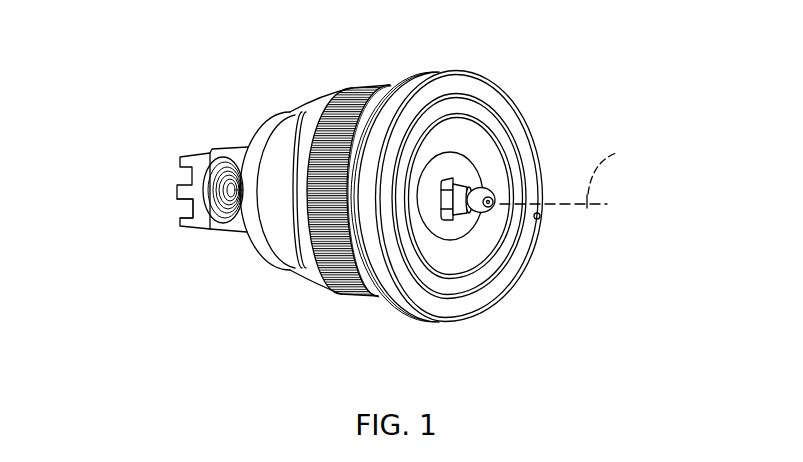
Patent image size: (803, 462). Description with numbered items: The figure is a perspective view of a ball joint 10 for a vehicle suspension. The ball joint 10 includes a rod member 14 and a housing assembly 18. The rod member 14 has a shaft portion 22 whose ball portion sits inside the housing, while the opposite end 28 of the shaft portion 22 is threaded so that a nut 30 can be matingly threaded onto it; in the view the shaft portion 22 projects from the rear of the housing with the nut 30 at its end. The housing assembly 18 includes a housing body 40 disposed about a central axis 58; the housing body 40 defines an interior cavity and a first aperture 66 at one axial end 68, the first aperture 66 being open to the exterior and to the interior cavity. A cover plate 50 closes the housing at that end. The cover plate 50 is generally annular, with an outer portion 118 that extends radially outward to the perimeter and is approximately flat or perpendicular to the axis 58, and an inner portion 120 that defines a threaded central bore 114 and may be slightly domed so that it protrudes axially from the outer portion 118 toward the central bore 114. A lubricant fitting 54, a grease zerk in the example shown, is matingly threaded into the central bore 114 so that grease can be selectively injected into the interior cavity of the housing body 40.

The ball joint 10 is at (563, 93).
The rod member 14 is at (227, 165).
The housing assembly 18 is at (292, 280).
The shaft portion 22 is at (228, 240).
The opposite end 28 is at (162, 170).
The nut 30 is at (198, 220).
The housing body 40 is at (321, 277).
The cover plate 50 is at (467, 133).
The lubricant fitting 54 is at (478, 217).
The central axis 58 is at (570, 174).
The first aperture 66 is at (478, 272).
The one axial end 68 is at (510, 275).
The central bore 114 is at (443, 180).
The outer portion 118 is at (452, 258).
The inner portion 120 is at (430, 226).